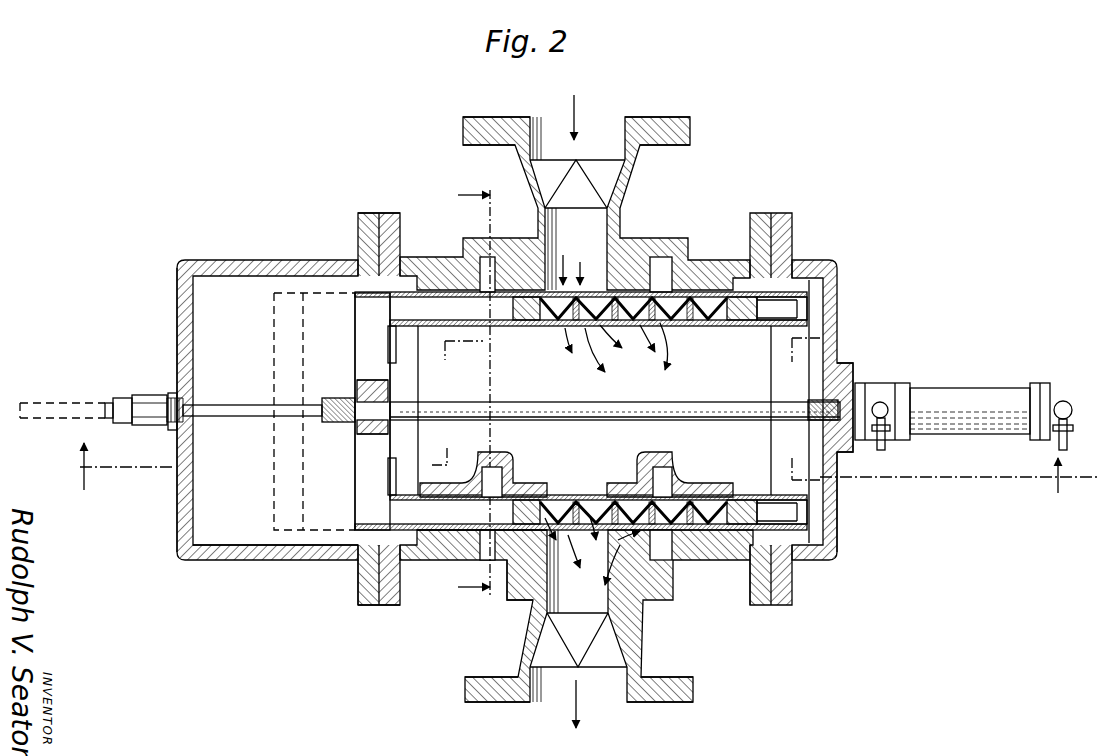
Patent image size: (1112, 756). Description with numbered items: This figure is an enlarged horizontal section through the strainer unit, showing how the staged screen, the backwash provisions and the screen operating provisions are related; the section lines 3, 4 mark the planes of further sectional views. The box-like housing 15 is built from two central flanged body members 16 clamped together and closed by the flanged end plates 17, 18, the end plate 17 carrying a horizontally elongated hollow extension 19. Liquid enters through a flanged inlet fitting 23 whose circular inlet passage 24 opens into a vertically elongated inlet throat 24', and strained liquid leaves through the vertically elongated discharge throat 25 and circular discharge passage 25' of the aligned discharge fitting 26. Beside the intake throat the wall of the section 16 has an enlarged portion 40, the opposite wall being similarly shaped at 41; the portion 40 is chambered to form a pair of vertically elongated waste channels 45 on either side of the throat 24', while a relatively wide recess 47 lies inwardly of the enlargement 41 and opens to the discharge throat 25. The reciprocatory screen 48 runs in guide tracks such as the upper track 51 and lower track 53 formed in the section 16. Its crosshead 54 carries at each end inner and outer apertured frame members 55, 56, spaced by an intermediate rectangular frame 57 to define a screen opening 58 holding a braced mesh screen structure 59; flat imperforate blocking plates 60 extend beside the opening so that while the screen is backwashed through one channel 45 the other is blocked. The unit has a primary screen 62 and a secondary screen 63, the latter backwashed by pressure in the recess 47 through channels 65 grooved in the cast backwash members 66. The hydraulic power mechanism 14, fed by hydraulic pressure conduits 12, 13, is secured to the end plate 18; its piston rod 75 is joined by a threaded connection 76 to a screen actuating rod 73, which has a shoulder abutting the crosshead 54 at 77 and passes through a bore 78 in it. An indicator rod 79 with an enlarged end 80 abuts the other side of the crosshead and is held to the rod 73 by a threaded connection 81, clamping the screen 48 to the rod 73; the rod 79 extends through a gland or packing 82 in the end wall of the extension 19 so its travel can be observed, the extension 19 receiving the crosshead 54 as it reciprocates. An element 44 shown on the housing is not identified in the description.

The section line 3- 3 is at (465, 390).
The section line 4- 4 is at (578, 468).
The hydraulic pressure conduit 12 is at (884, 447).
The hydraulic pressure conduit 13 is at (1058, 447).
The power mechanism 14 is at (952, 398).
The housing 15 is at (322, 256).
The central flanged body member 16 is at (698, 260).
The end plate 17 is at (362, 553).
The end plate 18 is at (830, 553).
The extension 19 is at (183, 507).
The inlet fitting 23 is at (655, 117).
The inlet passage 24 is at (577, 185).
The inlet throat 24' is at (604, 194).
The discharge throat 25 is at (597, 616).
The discharge passage 25' is at (590, 671).
The discharge fitting 26 is at (630, 657).
The enlarged portion 40 is at (462, 250).
The enlargement 41 is at (520, 587).
The flange 44 is at (388, 556).
The waste channel 45 is at (495, 262).
The recess 47 is at (507, 533).
The reciprocatory screen 48 is at (357, 490).
The upper guide track 51 is at (810, 313).
The lower guide track 53 is at (807, 520).
The crosshead 54 is at (274, 325).
The inner screen frame member 55 is at (398, 318).
The outer screen frame member 56 is at (403, 290).
The intermediate rectangular planar frame 57 is at (740, 325).
The screen opening 58 is at (668, 322).
The braced mesh screen structure 59 is at (632, 322).
The blocking element 60 is at (455, 253).
The primary screen 62 is at (790, 307).
The secondary screen 63 is at (799, 512).
The backwash channel 65 is at (493, 467).
The backwash member 66 is at (632, 453).
The screen actuating rod 73 is at (563, 403).
The piston rod 75 is at (843, 387).
The threaded connection 76 is at (365, 470).
The shoulder abutment 77 is at (390, 400).
The bore 78 is at (367, 424).
The indicator rod 79 is at (32, 405).
The enlarged end 80 is at (333, 396).
The threaded connection 81 is at (350, 415).
The gland or packing 82 is at (147, 397).